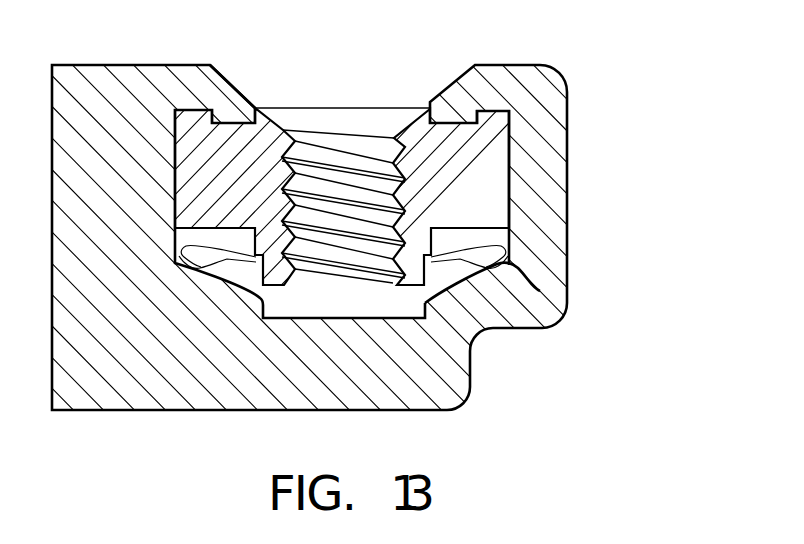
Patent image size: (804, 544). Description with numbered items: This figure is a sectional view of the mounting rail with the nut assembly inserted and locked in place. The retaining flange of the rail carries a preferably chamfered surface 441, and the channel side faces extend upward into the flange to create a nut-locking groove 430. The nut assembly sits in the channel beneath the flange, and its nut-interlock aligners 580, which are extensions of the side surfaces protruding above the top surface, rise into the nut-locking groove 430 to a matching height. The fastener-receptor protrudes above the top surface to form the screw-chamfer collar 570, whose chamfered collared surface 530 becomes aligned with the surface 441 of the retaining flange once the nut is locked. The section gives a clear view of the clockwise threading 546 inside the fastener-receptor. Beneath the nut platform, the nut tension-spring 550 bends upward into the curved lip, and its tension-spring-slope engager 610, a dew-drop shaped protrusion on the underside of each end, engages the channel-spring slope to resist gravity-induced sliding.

The nut-locking groove 430 is at (480, 147).
The surface 441 is at (239, 85).
The collared surface 530 is at (408, 112).
The threading 546 is at (362, 147).
The nut tension-spring 550 is at (510, 262).
The screw-chamfer collar 570 is at (273, 108).
The nut-interlock aligner 580 is at (470, 147).
The tension-spring-slope engager 610 is at (542, 291).